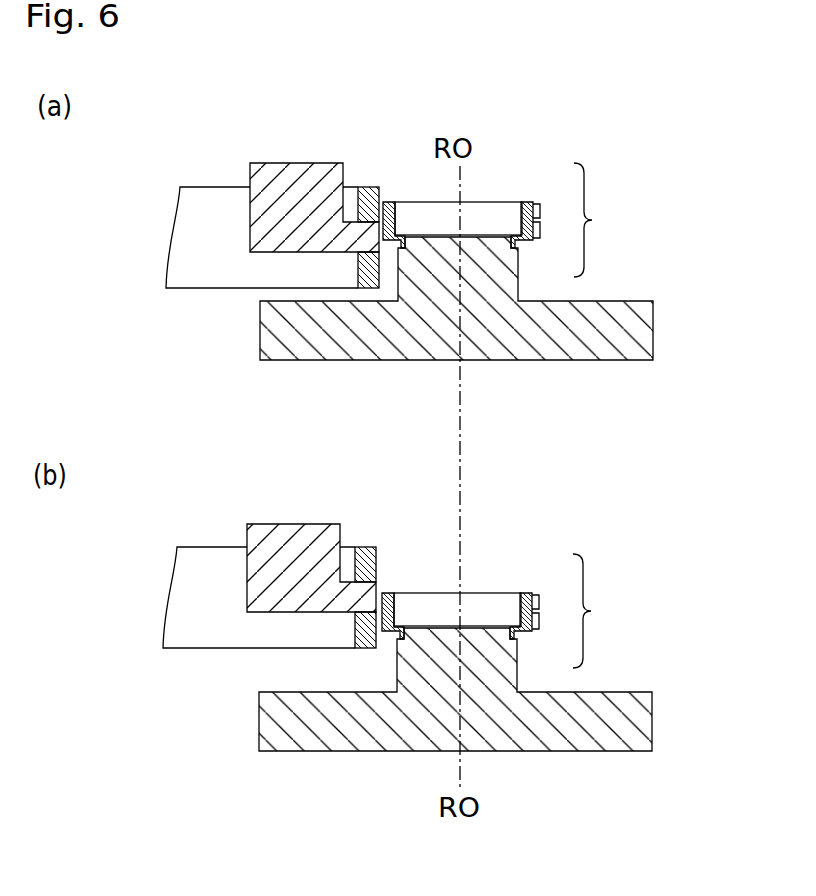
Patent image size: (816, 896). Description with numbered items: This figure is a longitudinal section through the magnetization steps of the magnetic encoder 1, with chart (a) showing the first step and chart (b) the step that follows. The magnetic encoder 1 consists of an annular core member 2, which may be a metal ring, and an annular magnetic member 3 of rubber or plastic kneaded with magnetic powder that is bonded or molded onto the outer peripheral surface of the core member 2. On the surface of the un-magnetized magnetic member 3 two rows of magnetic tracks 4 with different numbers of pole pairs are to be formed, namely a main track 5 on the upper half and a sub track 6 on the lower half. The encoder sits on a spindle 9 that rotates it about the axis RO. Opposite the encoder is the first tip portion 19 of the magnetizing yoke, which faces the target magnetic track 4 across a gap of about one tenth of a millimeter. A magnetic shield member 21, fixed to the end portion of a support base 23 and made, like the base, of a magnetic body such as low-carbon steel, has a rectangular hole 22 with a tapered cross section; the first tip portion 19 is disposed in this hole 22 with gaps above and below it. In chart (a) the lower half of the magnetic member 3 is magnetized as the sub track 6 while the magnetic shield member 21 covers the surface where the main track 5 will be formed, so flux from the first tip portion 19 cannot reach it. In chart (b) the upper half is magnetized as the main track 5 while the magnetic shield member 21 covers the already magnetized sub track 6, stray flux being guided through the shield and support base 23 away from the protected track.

The magnetic encoder 1 is at (490, 202).
The core member 2 is at (525, 202).
The magnetic member 3 is at (533, 202).
The magnetic track 4 is at (595, 415).
The main track 5 is at (542, 208).
The sub track 6 is at (542, 235).
The spindle 9 is at (635, 330).
The first tip portion 19 is at (296, 172).
The magnetic shield member 21 is at (369, 190).
The hole 22 is at (362, 262).
The support base 23 is at (210, 195).